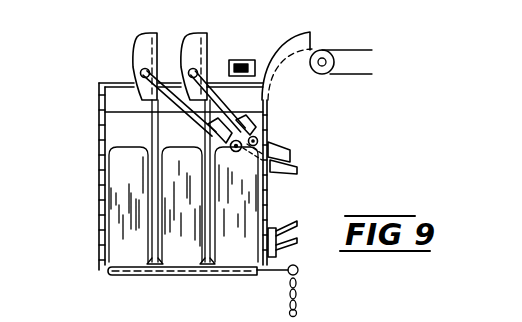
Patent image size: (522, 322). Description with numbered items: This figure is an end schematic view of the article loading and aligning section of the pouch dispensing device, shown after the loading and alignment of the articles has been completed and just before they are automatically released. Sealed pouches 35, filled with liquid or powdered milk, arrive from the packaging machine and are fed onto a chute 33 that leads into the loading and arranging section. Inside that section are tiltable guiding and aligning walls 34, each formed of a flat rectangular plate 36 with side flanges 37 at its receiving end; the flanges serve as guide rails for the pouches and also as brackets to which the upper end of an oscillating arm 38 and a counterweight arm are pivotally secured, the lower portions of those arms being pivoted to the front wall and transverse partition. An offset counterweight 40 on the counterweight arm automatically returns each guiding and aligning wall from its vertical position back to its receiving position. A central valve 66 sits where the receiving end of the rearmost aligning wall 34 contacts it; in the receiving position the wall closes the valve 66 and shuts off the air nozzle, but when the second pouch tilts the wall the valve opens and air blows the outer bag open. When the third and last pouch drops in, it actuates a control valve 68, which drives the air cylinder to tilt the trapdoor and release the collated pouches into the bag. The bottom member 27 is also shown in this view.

The bottom rail with chain 27 is at (137, 277).
The chute 33 is at (300, 43).
The guiding and aligning wall 34 is at (140, 55).
The sealed pouch 35 is at (237, 190).
The flat rectangular plate 36 is at (153, 133).
The side flange 37 is at (143, 42).
The oscillating arm 38 is at (170, 97).
The offset counterweight 40 is at (277, 150).
The central valve 66 is at (242, 60).
The control valve 68 is at (278, 231).